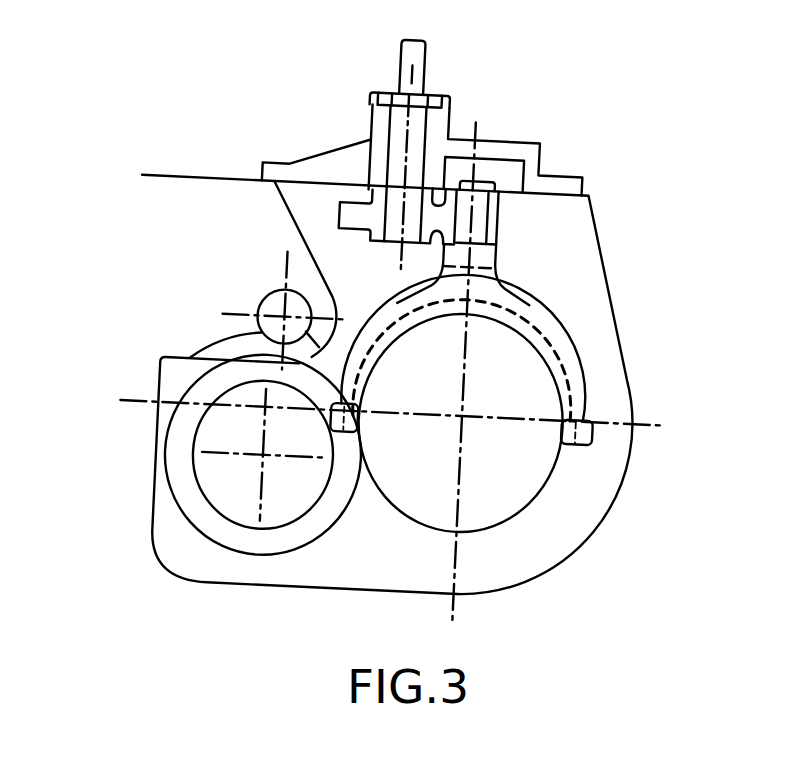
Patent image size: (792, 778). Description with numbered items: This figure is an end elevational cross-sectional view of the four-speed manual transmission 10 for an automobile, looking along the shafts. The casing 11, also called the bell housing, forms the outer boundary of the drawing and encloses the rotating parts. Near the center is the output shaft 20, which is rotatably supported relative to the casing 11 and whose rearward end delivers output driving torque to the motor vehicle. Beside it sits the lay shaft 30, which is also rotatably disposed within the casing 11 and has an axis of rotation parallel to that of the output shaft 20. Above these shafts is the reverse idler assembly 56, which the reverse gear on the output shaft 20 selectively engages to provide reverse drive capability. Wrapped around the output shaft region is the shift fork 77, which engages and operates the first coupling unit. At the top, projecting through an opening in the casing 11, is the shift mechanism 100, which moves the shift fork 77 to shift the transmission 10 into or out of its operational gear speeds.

The manual transmission 10 is at (680, 297).
The casing 11 is at (605, 253).
The output shaft 20 is at (525, 485).
The lay shaft 30 is at (211, 484).
The reverse idler assembly 56 is at (260, 300).
The shift fork 77 is at (565, 375).
The shift mechanism 100 is at (439, 92).